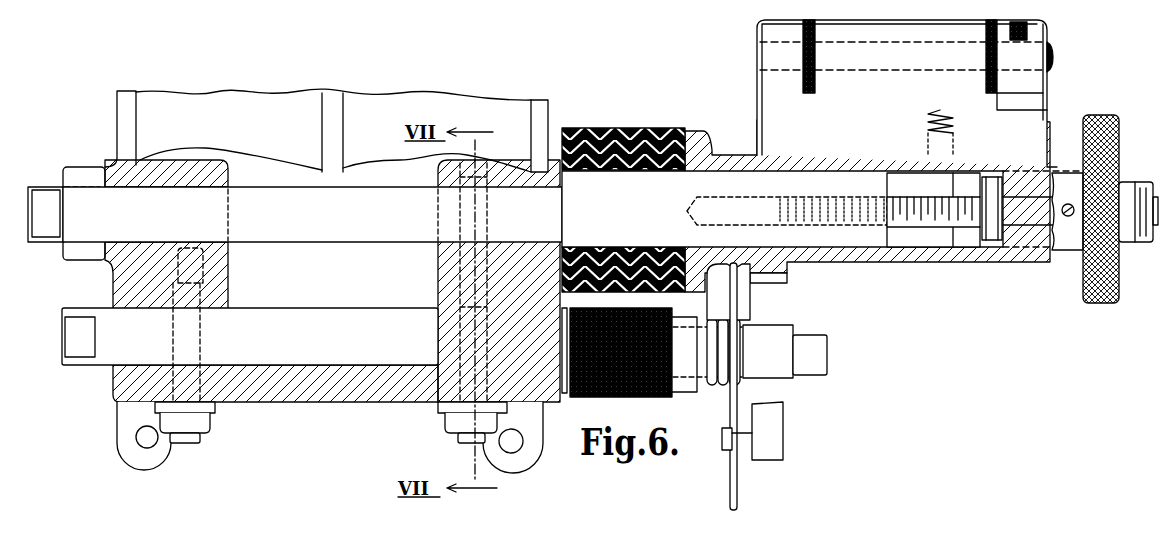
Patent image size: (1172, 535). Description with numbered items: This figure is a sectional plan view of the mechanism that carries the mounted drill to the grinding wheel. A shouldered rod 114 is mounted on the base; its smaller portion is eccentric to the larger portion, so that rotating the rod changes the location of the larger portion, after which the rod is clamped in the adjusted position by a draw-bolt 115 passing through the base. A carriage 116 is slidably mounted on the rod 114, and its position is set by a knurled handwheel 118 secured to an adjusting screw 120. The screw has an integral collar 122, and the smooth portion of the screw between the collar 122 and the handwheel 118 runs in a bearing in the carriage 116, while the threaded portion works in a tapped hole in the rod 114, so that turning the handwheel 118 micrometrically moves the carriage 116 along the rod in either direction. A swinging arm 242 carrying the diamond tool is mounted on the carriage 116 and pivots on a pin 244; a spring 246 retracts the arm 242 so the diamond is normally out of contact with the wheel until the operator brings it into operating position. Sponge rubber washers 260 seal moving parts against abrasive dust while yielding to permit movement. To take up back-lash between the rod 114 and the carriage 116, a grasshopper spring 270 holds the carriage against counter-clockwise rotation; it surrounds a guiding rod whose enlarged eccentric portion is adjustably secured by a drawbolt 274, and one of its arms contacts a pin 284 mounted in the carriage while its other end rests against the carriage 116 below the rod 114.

The shouldered rod 114 is at (847, 237).
The draw-bolt 115 is at (478, 222).
The carriage 116 is at (1023, 257).
The knurled handwheel 118 is at (1097, 304).
The adjusting screw 120 is at (933, 230).
The integral collar 122 is at (990, 242).
The swinging arm 242 is at (973, 80).
The pin 244 is at (1035, 53).
The spring 246 is at (962, 104).
The sponge rubber washers 260 is at (688, 121).
The grasshopper spring 270 is at (745, 490).
The drawbolt 274 is at (190, 330).
The pin 284 is at (743, 447).